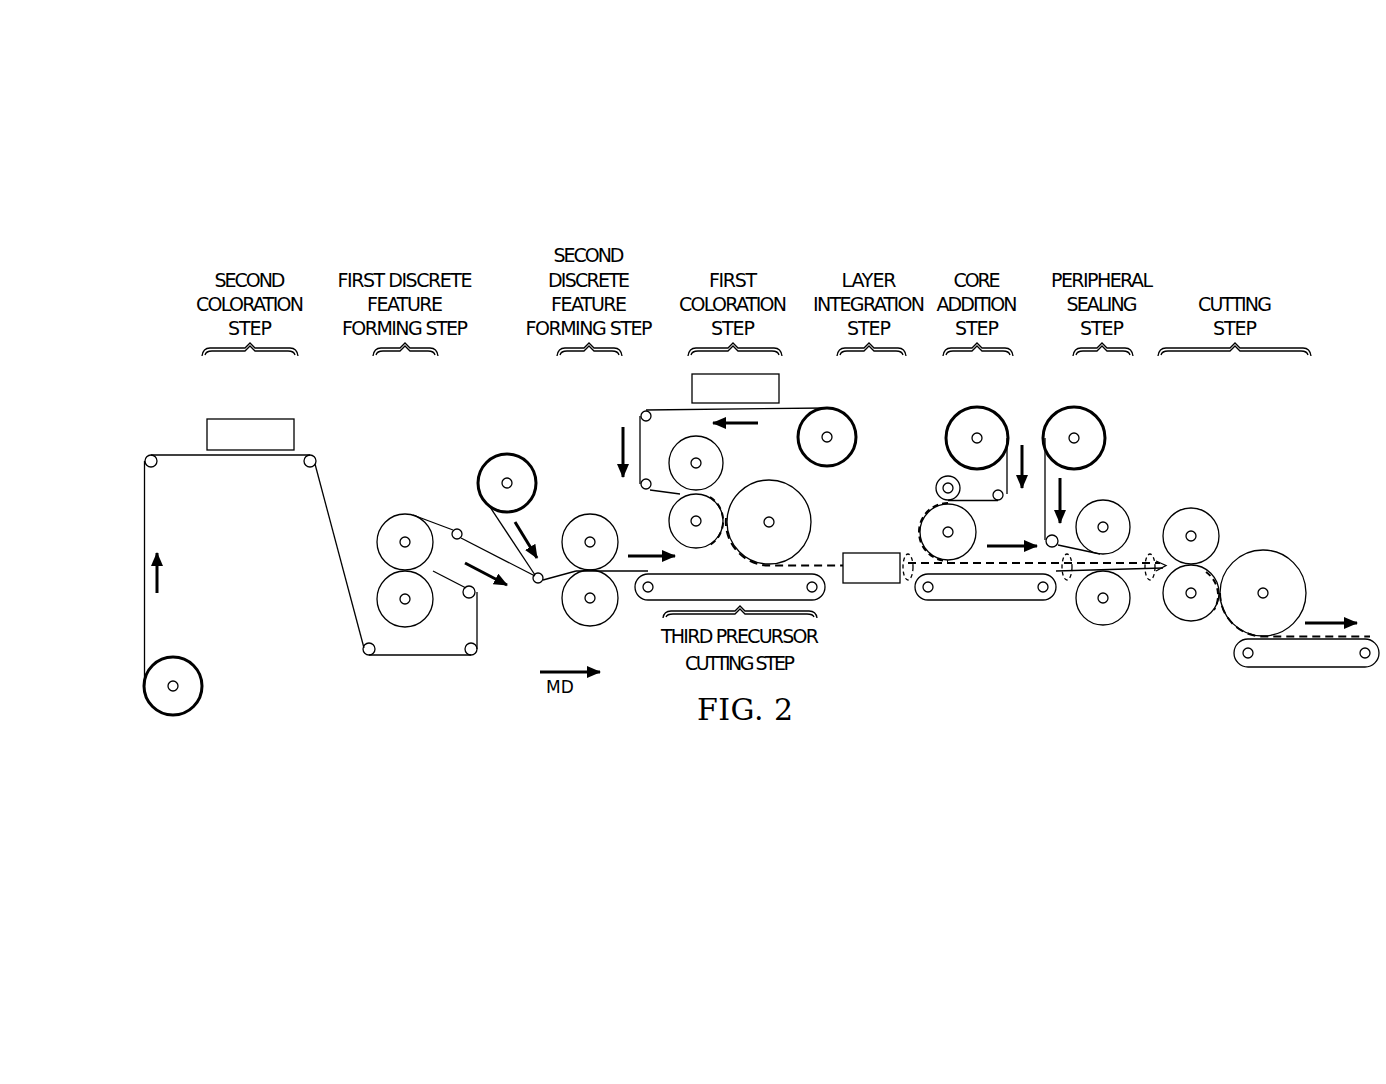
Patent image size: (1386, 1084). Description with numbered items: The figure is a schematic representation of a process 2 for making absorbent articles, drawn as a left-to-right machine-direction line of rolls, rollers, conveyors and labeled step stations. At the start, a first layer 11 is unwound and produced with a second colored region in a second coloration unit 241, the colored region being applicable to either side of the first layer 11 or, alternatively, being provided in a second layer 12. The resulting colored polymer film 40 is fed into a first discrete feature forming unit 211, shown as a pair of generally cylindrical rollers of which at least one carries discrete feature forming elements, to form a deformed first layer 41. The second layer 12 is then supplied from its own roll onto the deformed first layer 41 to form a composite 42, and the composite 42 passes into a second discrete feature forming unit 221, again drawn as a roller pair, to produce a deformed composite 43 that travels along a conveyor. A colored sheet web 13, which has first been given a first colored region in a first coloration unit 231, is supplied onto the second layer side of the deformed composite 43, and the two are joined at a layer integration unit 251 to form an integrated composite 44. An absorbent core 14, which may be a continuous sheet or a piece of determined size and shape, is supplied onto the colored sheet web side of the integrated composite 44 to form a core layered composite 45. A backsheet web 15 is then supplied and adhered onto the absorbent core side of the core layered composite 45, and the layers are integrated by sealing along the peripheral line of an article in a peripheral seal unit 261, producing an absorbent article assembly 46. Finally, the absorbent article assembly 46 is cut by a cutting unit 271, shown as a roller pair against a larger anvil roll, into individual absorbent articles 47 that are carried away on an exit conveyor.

The process 2 is at (170, 359).
The first layer 11 is at (167, 716).
The second layer 12 is at (498, 454).
The colored sheet web 13 is at (857, 432).
The absorbent core 14 is at (947, 440).
The backsheet web 15 is at (1103, 435).
The colored polymer film 40 is at (420, 656).
The deformed first layer 41 is at (445, 519).
The composite 42 is at (553, 589).
The deformed composite 43 is at (619, 574).
The integrated composite 44 is at (908, 577).
The core layered composite 45 is at (1067, 582).
The absorbent article assembly 46 is at (1150, 580).
The individual absorbent articles 47 is at (1364, 638).
The first discrete feature forming unit 211 is at (405, 504).
The second discrete feature forming unit 221 is at (589, 504).
The first coloration unit 231 is at (692, 387).
The second coloration unit 241 is at (207, 432).
The layer integration unit 251 is at (869, 587).
The peripheral seal unit 261 is at (1104, 642).
The cutting unit 271 is at (1190, 501).